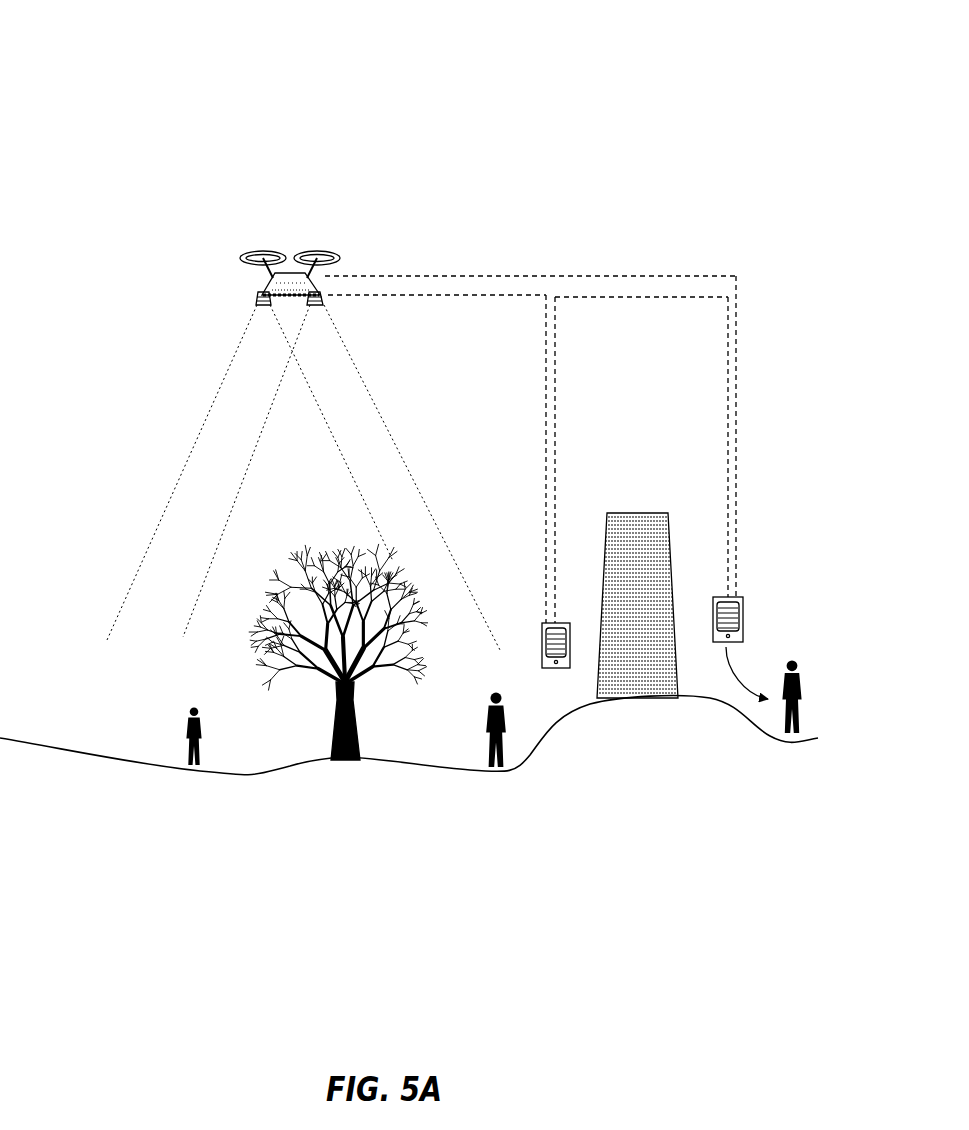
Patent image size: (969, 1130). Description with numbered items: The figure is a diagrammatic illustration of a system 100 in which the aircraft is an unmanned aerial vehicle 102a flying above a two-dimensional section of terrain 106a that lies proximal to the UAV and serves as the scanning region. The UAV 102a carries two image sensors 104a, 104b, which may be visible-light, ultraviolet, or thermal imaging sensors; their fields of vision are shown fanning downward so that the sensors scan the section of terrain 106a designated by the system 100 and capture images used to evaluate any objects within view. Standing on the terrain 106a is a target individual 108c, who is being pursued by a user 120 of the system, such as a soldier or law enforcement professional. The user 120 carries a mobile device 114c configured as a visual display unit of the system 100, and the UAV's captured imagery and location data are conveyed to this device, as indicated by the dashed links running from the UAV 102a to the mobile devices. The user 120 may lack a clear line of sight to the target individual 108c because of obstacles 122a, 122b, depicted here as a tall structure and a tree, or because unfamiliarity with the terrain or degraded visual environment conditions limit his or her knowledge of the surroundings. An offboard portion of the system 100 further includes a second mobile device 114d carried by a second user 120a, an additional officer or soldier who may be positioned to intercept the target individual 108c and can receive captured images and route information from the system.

The system 100 is at (87, 72).
The unmanned aerial vehicle 102a is at (308, 238).
The image sensor 104a is at (252, 304).
The image sensor 104b is at (332, 304).
The section of terrain 106a is at (25, 740).
The target individual 108c is at (193, 707).
The mobile device 114c is at (745, 617).
The second mobile device 114d is at (542, 644).
The user 120 is at (792, 740).
The second user 120a is at (493, 773).
The obstacle 122a is at (618, 513).
The obstacle 122b is at (349, 760).